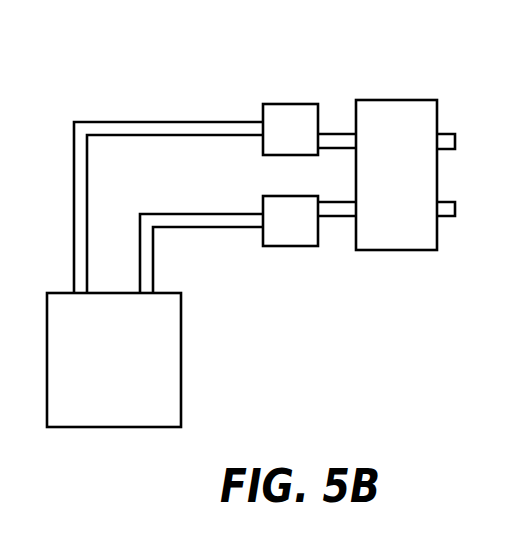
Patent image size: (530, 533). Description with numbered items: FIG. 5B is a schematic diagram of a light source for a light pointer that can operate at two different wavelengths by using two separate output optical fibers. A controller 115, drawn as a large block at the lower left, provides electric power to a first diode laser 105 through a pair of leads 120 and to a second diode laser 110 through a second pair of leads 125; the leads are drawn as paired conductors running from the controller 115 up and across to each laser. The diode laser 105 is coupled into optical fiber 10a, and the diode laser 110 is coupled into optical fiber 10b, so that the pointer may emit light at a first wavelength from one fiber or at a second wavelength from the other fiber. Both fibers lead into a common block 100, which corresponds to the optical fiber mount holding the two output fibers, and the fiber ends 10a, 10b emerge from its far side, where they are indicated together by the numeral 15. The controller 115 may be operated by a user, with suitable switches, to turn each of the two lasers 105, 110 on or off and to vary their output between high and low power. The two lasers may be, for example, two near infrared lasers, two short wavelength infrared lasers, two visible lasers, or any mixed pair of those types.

The main unit 100 is at (386, 100).
The diode laser 105 is at (282, 104).
The diode laser 110 is at (283, 246).
The controller 115 is at (181, 340).
The leads 120 is at (87, 163).
The leads 125 is at (188, 214).
The optical fiber 10a is at (337, 132).
The optical fiber 10b is at (447, 216).
The ports 15 is at (455, 143).